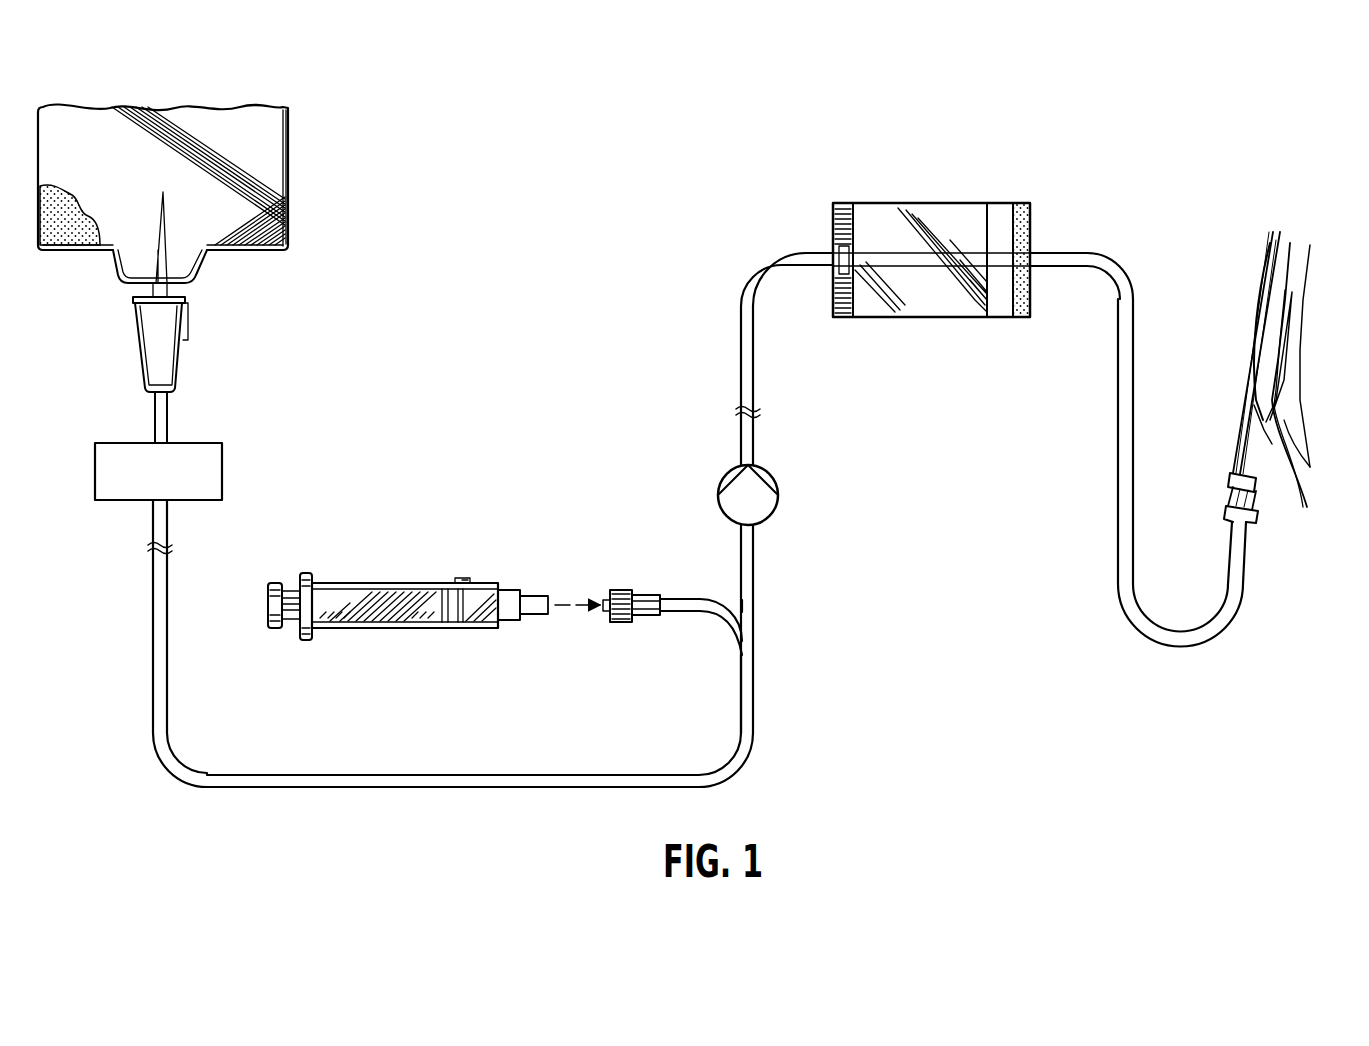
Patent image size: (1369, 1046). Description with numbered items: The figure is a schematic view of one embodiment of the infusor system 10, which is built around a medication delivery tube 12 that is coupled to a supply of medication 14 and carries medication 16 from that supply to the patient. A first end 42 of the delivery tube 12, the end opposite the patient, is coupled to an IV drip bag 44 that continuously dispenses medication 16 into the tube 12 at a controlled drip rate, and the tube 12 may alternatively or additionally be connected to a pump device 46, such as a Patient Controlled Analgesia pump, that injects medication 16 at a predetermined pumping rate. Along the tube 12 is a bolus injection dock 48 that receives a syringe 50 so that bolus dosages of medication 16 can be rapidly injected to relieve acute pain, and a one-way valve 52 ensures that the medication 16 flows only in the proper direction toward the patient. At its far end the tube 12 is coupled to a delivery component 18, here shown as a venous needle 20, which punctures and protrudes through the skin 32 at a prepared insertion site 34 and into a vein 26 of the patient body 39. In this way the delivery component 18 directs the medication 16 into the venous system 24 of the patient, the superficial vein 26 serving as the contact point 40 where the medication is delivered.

The infusor system 10 is at (824, 80).
The medication delivery tube 12 is at (370, 777).
The supply of medication 14 is at (291, 135).
The medication 16 is at (62, 240).
The delivery component 18 is at (1201, 411).
The venous needle 20 is at (1247, 443).
The venous system 24 is at (1301, 447).
The vein 26 is at (1283, 393).
The skin 32 is at (1258, 281).
The insertion site 34 is at (1256, 410).
The patient body 39 is at (1266, 263).
The contact point 40 is at (1289, 295).
The first end 42 is at (154, 224).
The IV drip bag 44 is at (288, 201).
The pump device 46 is at (222, 464).
The bolus injection dock 48 is at (618, 590).
The syringe 50 is at (381, 583).
The one-way valve 52 is at (720, 500).